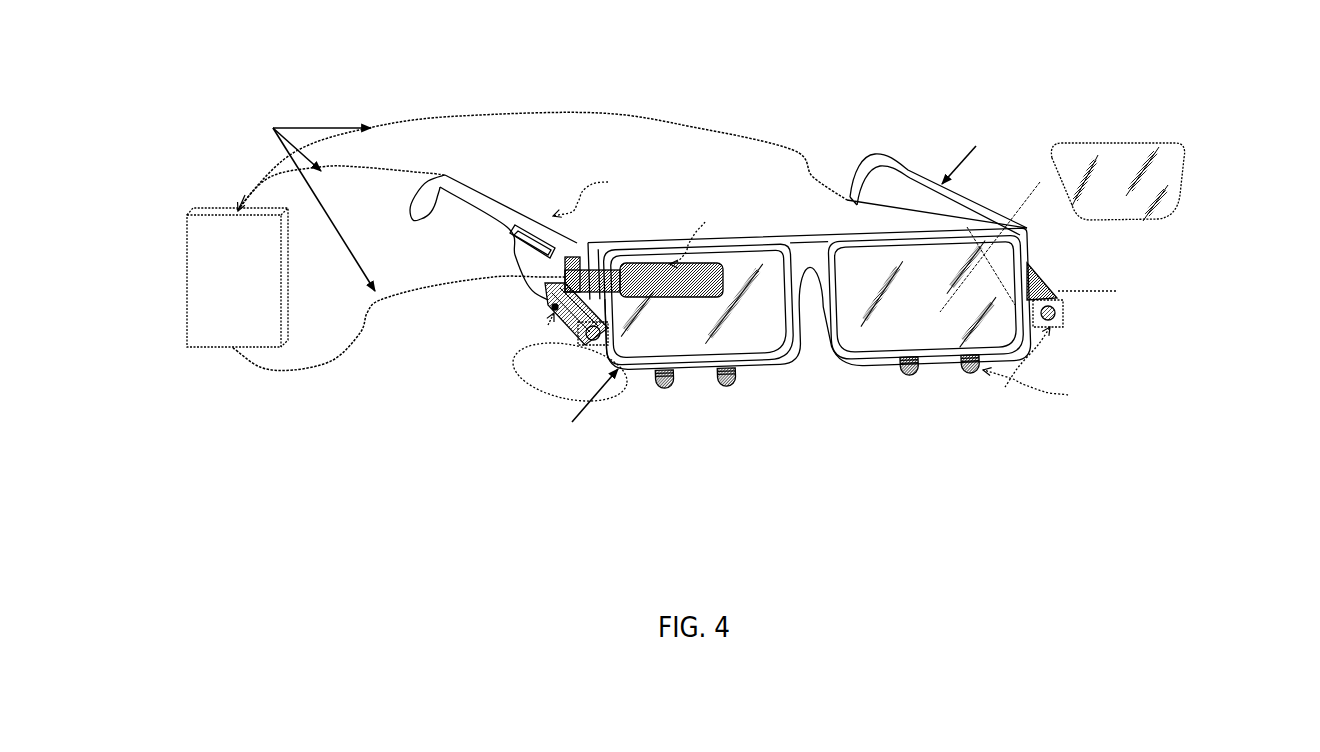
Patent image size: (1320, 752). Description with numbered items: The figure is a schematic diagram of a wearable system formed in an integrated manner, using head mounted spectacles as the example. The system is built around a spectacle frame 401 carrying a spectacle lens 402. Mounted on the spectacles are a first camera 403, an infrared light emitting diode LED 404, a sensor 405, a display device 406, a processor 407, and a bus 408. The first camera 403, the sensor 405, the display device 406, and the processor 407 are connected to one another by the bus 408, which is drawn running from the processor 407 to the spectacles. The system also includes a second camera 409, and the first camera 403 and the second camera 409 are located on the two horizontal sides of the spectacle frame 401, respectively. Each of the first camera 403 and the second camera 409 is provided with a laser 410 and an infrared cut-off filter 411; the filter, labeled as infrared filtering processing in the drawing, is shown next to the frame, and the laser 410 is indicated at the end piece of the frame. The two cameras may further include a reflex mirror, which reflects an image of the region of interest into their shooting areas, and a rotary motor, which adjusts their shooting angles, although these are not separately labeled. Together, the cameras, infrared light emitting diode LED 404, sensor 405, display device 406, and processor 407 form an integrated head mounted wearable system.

The spectacle frame 401 is at (965, 105).
The spectacle lens 402 is at (498, 443).
The first camera 403 is at (692, 428).
The infrared light emitting diode LED 404 is at (1148, 418).
The sensor 405 is at (618, 137).
The display device 406 is at (740, 183).
The processor 407 is at (193, 282).
The bus 408 is at (273, 73).
The second camera 409 is at (890, 427).
The laser 410 is at (1180, 297).
The infrared cut-off filter 411 is at (1160, 223).